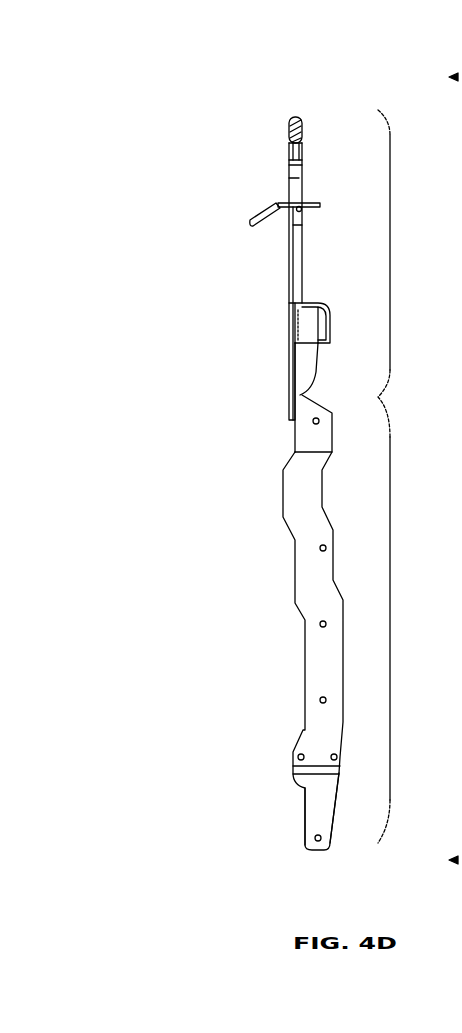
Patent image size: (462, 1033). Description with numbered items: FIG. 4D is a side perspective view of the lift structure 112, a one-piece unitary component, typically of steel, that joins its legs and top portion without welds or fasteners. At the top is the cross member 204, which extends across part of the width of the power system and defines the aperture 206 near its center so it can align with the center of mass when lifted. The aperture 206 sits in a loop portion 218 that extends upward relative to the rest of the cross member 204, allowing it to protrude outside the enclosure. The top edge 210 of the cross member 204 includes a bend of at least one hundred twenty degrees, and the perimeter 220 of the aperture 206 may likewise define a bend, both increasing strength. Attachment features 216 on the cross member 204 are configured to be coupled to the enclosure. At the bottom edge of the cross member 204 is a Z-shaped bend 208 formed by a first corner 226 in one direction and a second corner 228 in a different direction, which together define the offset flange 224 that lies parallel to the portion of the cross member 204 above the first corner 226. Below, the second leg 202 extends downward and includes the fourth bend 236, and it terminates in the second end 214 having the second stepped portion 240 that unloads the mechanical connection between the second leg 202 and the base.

The lift structure 112 is at (190, 50).
The second leg 202 is at (392, 620).
The cross member 204 is at (392, 253).
The aperture 206 is at (295, 178).
The Z-shaped bend 208 is at (338, 298).
The top edge 210 is at (294, 116).
The second end 214 is at (252, 747).
The attachment features 216 is at (261, 218).
The loop portion 218 is at (289, 131).
The perimeter 220 is at (302, 140).
The offset flange 224 is at (331, 328).
The first corner 226 is at (298, 301).
The second corner 228 is at (316, 323).
The fourth bend 236 is at (296, 452).
The second stepped portion 240 is at (283, 761).